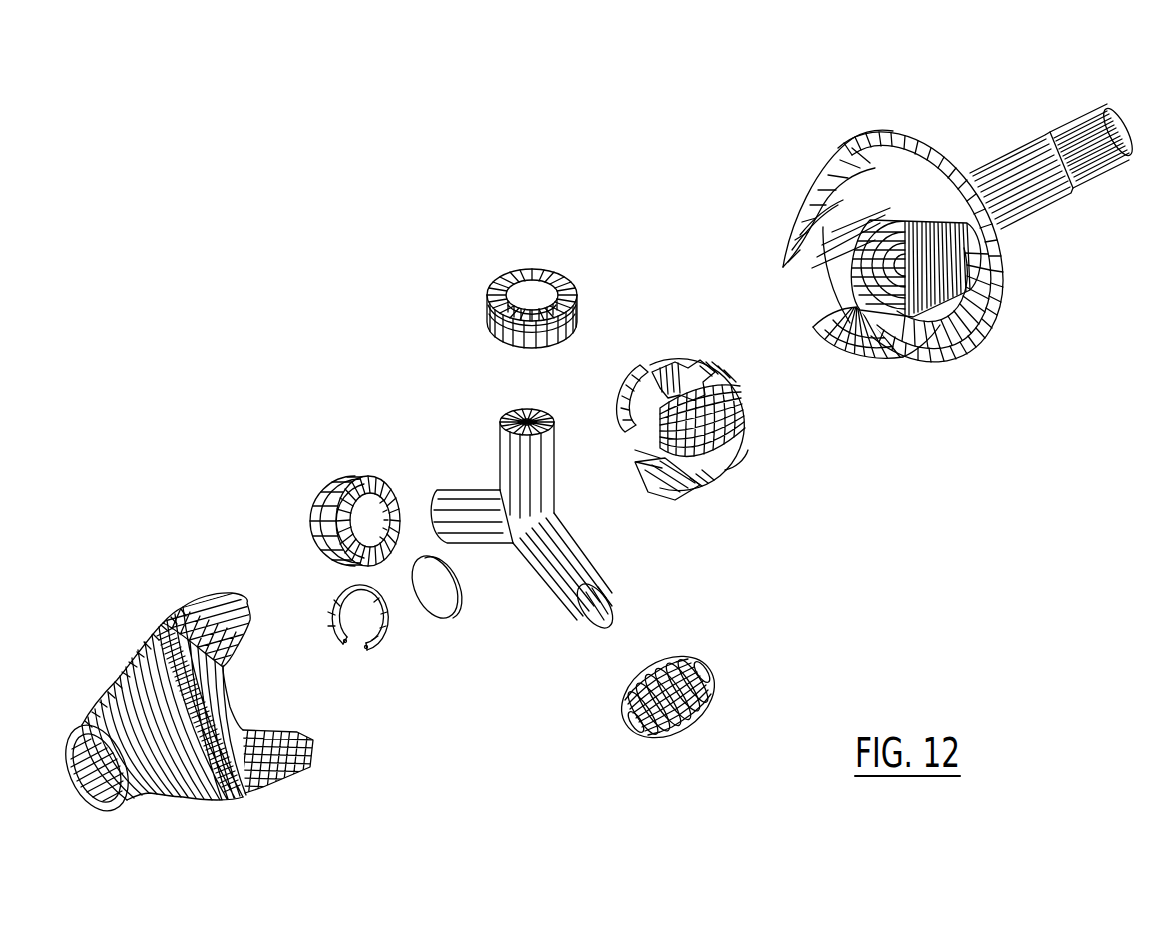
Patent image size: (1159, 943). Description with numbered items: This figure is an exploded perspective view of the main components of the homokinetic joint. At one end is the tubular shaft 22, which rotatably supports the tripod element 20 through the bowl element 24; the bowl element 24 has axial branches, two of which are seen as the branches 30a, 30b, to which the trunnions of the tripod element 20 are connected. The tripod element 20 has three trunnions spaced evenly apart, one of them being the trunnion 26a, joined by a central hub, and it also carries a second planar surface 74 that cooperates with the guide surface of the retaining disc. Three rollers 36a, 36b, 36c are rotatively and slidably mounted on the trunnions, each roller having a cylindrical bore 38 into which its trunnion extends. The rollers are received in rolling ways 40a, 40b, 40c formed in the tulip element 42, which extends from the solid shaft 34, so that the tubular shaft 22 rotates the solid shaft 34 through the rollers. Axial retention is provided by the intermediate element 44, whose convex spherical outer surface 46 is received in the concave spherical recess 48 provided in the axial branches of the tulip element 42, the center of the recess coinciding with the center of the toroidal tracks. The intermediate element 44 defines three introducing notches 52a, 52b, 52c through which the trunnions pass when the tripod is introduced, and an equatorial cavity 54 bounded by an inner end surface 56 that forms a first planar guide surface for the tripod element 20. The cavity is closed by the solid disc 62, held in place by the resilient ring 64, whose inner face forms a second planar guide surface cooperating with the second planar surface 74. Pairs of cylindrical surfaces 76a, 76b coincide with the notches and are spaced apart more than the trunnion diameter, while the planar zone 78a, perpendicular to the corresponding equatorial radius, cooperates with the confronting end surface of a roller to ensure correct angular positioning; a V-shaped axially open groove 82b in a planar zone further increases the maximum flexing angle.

The tripod element 20 is at (511, 501).
The tubular shaft 22 is at (106, 806).
The bowl element 24 is at (198, 686).
The trunnion 26a is at (520, 418).
The axial branch 30a is at (233, 600).
The axial branch 30b is at (287, 770).
The solid shaft 34 is at (1093, 150).
The roller 36a is at (577, 312).
The roller 36b is at (718, 673).
The roller 36c is at (320, 480).
The cylindrical bore 38 is at (531, 290).
The rolling way 40a is at (793, 266).
The rolling way 40b is at (878, 345).
The rolling way 40c is at (812, 326).
The tulip element 42 is at (929, 261).
The intermediate element 44 is at (699, 422).
The convex spherical outer surface 46 is at (750, 412).
The concave spherical recess 48 is at (822, 268).
The introducing notch 52a is at (624, 402).
The introducing notch 52b is at (672, 486).
The introducing notch 52c is at (645, 459).
The equatorial cavity 54 is at (641, 392).
The inner end surface 56 is at (690, 384).
The solid disc 62 is at (438, 602).
The resilient ring 64 is at (365, 655).
The second planar surface 74 is at (509, 519).
The pair of cylindrical surfaces 76a is at (663, 375).
The pair of cylindrical surfaces 76b is at (718, 484).
The planar zone 78a is at (735, 398).
The axially open groove 82b is at (740, 470).